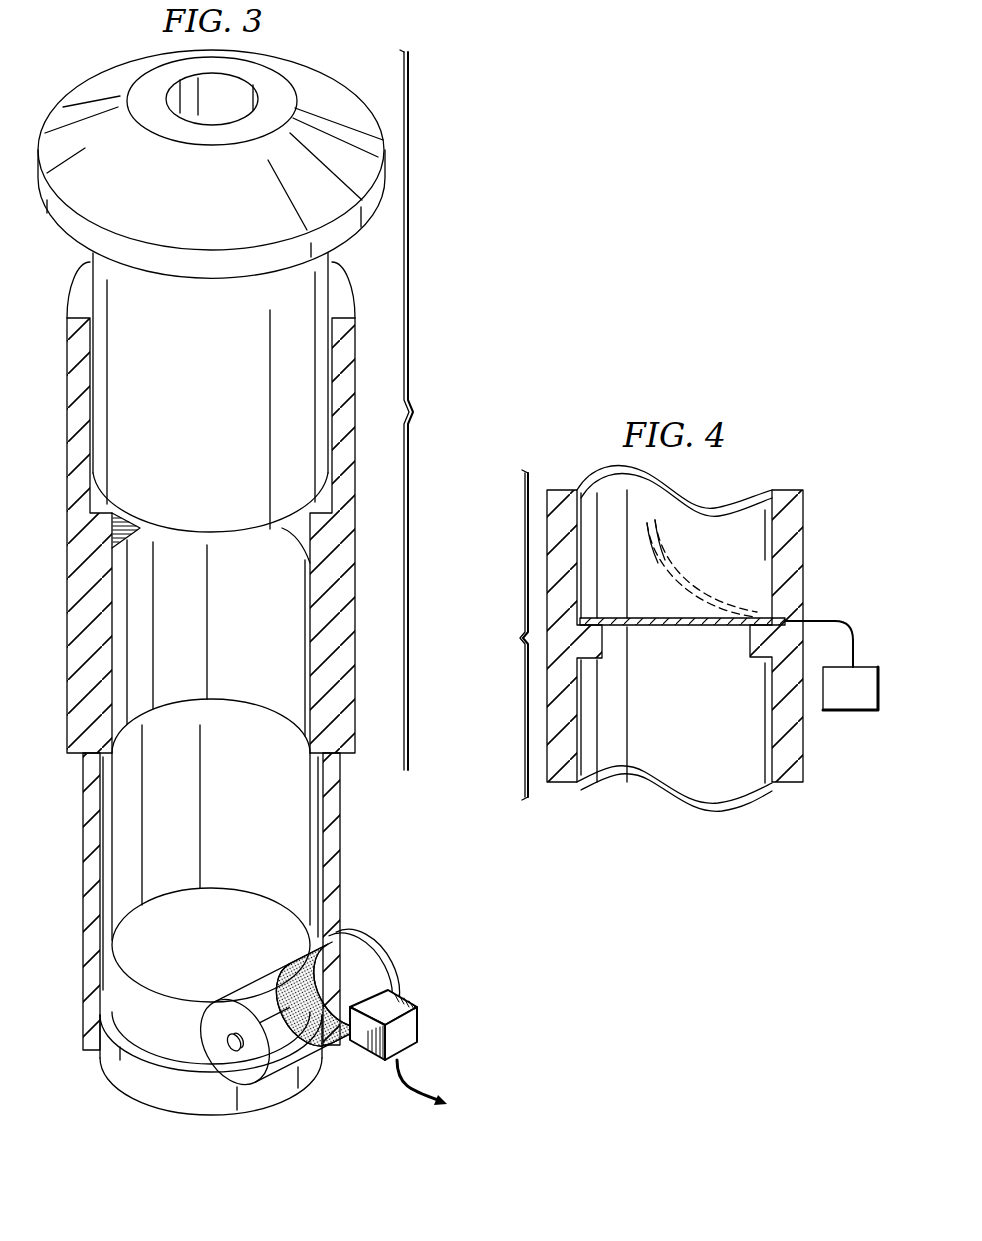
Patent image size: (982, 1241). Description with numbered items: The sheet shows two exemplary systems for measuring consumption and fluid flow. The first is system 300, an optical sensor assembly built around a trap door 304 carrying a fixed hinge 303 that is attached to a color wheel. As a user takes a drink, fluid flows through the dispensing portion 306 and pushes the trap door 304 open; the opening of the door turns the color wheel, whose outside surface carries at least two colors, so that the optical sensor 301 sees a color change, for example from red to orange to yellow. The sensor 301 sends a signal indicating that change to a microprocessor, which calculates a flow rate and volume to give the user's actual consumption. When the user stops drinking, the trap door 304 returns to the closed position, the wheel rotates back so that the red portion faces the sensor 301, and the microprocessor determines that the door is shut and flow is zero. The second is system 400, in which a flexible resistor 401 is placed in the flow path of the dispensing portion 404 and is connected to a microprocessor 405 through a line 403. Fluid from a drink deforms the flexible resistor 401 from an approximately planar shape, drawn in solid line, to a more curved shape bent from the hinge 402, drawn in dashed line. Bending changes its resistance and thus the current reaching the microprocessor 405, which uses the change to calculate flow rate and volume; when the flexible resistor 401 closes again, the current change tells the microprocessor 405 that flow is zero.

In FIG. 3, the system 300 is at (465, 168).
In FIG. 3, the optical sensor 301 is at (408, 1028).
In FIG. 3, the fixed hinge 303 is at (244, 994).
In FIG. 3, the trap door 304 is at (225, 898).
In FIG. 3, the dispensing portion 306 is at (428, 410).
In FIG. 4, the system 400 is at (797, 452).
In FIG. 4, the flexible resistor 401 is at (682, 628).
In FIG. 4, the hinge 402 is at (762, 614).
In FIG. 4, the line 403 is at (836, 618).
In FIG. 4, the dispensing portion 404 is at (504, 635).
In FIG. 4, the microprocessor 405 is at (846, 712).